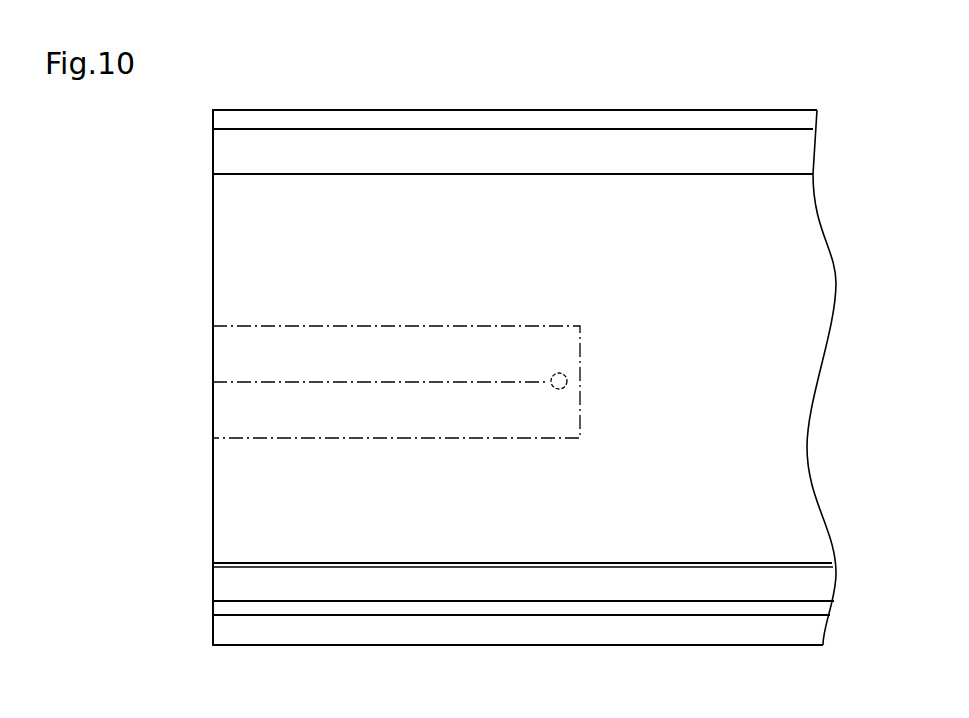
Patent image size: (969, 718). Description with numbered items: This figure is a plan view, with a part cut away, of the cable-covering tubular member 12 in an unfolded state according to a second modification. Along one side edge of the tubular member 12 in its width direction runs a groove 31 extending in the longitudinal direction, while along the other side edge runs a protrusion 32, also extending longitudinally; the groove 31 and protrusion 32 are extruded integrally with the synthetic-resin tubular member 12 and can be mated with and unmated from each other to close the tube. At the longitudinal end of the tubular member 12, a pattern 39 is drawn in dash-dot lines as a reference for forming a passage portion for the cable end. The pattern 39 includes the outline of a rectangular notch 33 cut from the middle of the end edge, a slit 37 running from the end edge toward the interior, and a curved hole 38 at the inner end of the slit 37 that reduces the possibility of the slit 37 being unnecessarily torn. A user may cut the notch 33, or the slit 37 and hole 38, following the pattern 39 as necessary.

The tubular member 12 is at (176, 155).
The groove 31 is at (358, 614).
The protrusion 32 is at (395, 122).
The notch 33 is at (238, 325).
The slit 37 is at (380, 382).
The hole 38 is at (567, 373).
The pattern 39 is at (571, 303).